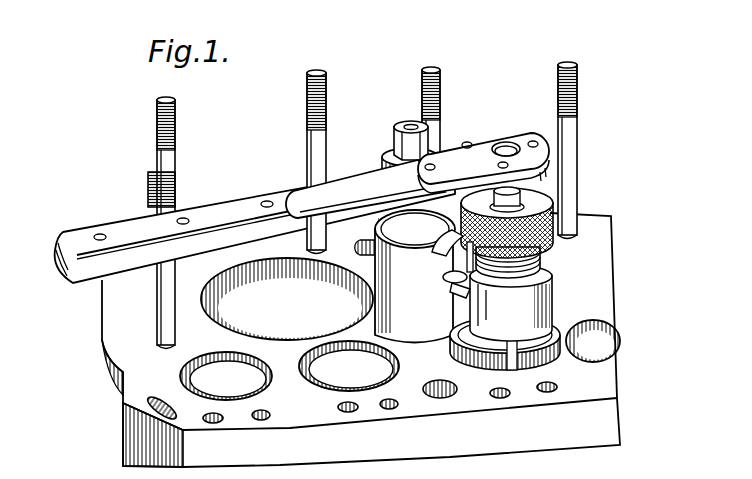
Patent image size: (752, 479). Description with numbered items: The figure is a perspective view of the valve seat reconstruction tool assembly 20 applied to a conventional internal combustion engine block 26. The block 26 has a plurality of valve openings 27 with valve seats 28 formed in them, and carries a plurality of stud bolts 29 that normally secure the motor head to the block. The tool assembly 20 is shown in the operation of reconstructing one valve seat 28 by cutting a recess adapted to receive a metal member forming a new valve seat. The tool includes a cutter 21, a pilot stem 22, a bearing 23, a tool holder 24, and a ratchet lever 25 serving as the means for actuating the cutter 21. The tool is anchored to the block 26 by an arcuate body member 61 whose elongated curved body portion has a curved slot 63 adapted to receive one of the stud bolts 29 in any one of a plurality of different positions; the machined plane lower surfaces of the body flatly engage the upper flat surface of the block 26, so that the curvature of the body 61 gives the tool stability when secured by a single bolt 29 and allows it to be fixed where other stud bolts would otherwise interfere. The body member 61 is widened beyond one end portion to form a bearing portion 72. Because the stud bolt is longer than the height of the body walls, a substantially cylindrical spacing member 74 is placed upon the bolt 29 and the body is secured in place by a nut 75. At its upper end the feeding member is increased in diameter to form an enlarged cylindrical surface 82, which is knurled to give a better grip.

The valve seat reconstruction tool assembly 20 is at (560, 265).
The cutter 21 is at (473, 354).
The pilot stem 22 is at (549, 186).
The bearing 23 is at (553, 217).
The tool holder 24 is at (412, 303).
The ratchet lever 25 is at (233, 207).
The internal combustion engine block 26 is at (128, 380).
The valve openings 27 is at (210, 383).
The valve seats 28 is at (180, 377).
The stud bolts 29 is at (155, 175).
The body member 61 is at (545, 292).
The curved slot 63 is at (446, 252).
The bearing portion 72 is at (450, 288).
The spacing member 74 is at (387, 160).
The nut 75 is at (401, 122).
The enlarged cylindrical surface 82 is at (528, 210).